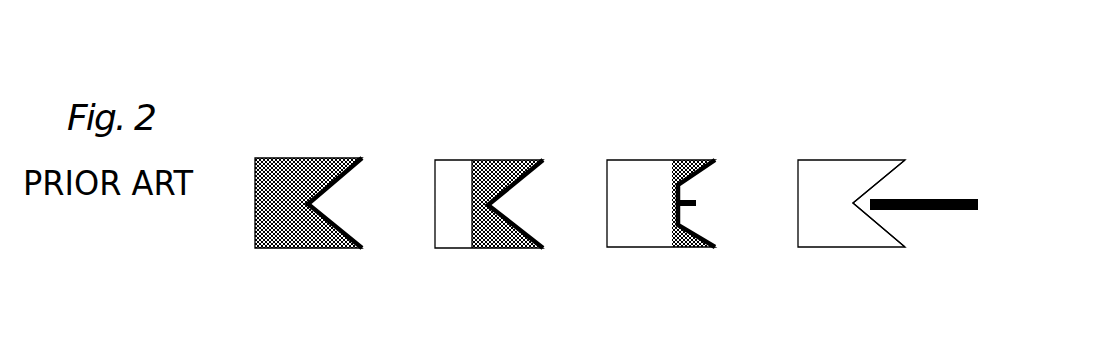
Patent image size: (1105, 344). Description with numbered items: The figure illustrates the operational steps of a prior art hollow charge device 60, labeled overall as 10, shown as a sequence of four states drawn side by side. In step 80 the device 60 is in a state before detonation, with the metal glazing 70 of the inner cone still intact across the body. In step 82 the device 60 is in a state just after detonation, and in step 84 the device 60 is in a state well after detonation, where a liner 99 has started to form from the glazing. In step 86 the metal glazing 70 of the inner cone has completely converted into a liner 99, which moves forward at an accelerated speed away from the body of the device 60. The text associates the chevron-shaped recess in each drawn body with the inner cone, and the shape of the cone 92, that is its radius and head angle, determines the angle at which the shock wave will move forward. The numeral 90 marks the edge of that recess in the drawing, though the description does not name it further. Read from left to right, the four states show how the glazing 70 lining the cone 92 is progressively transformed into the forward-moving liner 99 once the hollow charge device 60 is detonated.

The prior art drill bit assembly 10 is at (1065, 333).
The hollow charge device 60 is at (298, 248).
The metal glazing 70 is at (300, 178).
The step 80 is at (331, 113).
The step 82 is at (511, 108).
The step 84 is at (698, 110).
The step 86 is at (888, 108).
The chevron-shaped braze joint 90 is at (352, 228).
The cone 92 is at (883, 180).
The liner 99 is at (693, 203).